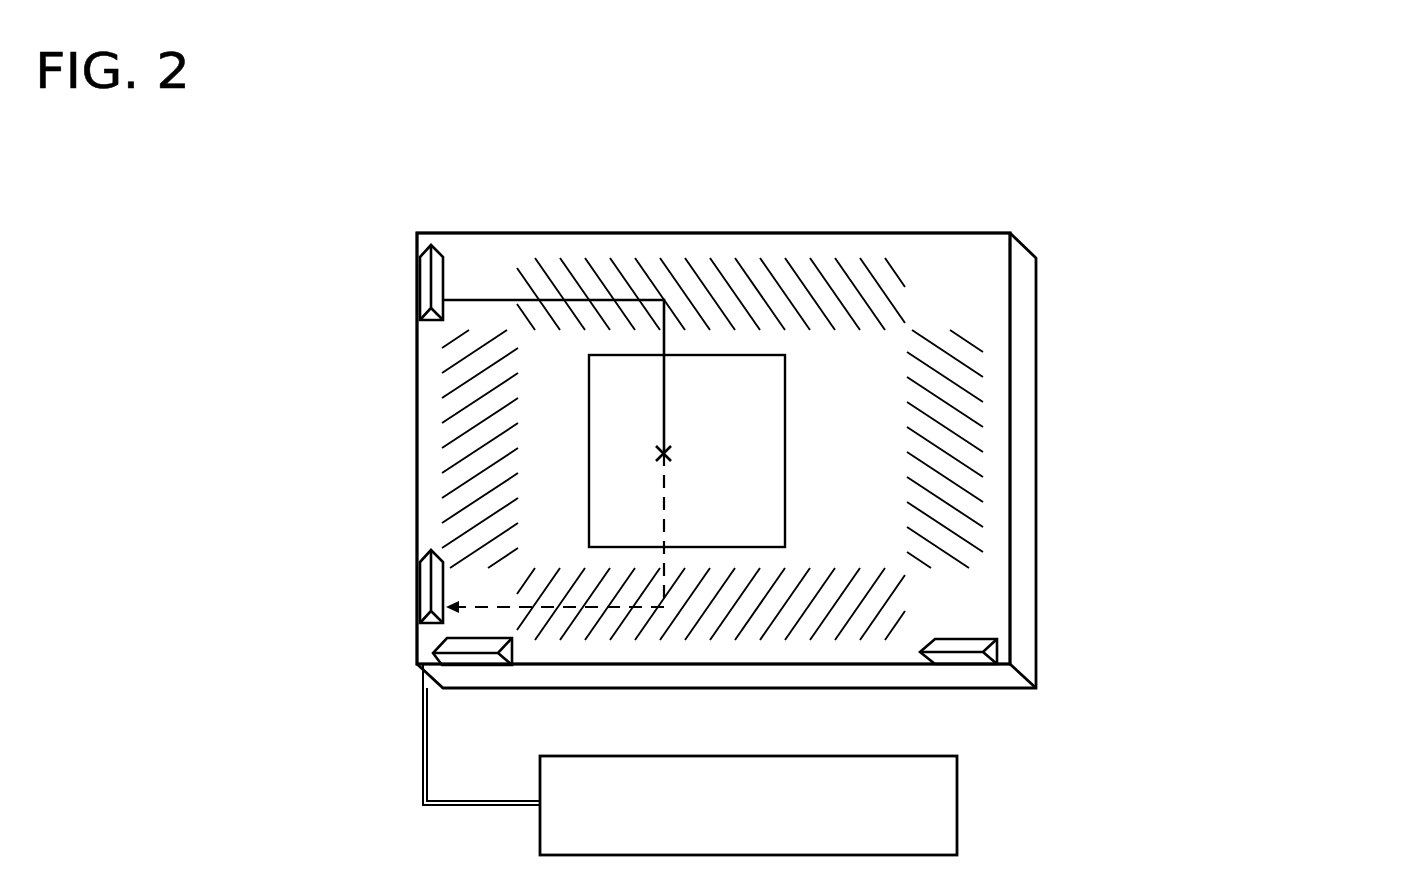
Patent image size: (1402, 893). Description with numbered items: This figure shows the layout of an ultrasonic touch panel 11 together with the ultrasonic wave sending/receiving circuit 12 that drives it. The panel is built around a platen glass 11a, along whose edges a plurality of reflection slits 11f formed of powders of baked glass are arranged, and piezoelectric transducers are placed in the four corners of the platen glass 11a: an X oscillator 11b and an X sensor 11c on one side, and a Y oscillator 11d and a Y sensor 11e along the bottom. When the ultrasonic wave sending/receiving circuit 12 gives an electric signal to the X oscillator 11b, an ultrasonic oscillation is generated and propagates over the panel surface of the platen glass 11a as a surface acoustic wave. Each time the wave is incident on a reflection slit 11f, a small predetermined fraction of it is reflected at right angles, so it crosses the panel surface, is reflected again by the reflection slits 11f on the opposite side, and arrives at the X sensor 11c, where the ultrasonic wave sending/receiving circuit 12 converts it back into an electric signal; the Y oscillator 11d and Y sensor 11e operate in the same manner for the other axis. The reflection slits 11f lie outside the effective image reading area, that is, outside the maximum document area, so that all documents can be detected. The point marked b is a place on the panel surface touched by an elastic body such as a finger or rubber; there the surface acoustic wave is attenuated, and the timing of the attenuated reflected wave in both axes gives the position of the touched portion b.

The ultrasonic touch panel 11 is at (797, 233).
The platen glass 11a is at (940, 322).
The X oscillator 11b is at (425, 279).
The X sensor 11c is at (420, 588).
The Y oscillator 11d is at (960, 657).
The Y sensor 11e is at (483, 658).
The reflection slit 11f is at (963, 482).
The ultrasonic wave sending/receiving circuit 12 is at (957, 805).
The touched portion b is at (672, 452).